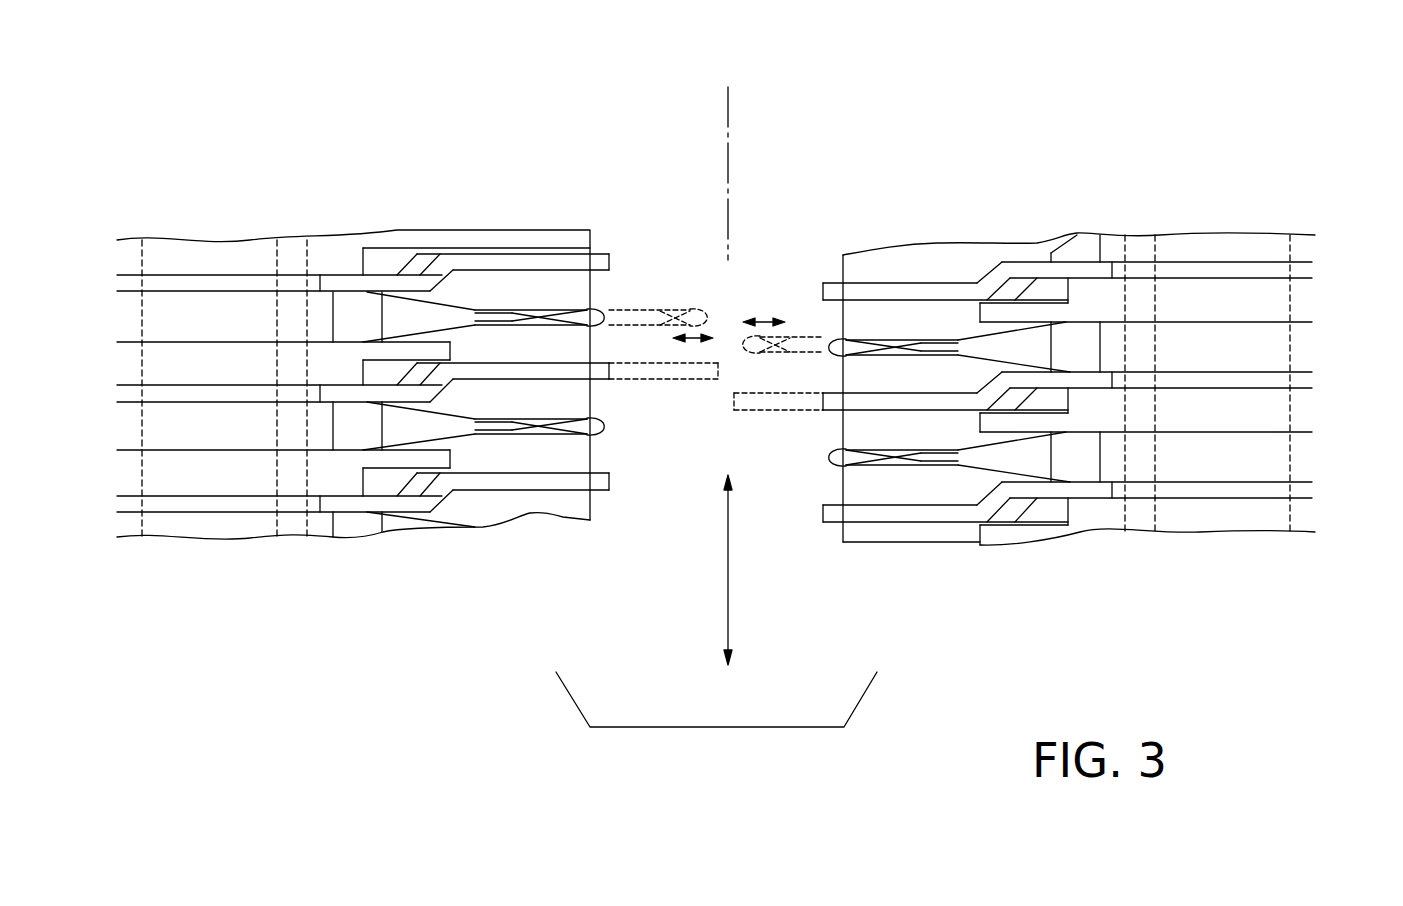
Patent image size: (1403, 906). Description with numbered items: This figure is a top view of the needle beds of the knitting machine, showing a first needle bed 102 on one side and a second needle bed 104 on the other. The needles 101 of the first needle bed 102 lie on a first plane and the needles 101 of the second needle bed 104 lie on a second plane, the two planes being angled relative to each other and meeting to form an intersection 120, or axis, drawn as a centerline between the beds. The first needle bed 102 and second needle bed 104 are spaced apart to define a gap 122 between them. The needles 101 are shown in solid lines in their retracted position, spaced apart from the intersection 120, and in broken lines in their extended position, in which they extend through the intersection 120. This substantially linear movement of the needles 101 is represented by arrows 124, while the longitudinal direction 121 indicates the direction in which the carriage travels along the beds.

The needles 101 is at (512, 427).
The first needle bed 102 is at (122, 552).
The second needle bed 104 is at (1312, 222).
The intersection 120 is at (728, 148).
The longitudinal direction 121 is at (716, 601).
The gap 122 is at (703, 270).
The arrows 124 is at (693, 348).